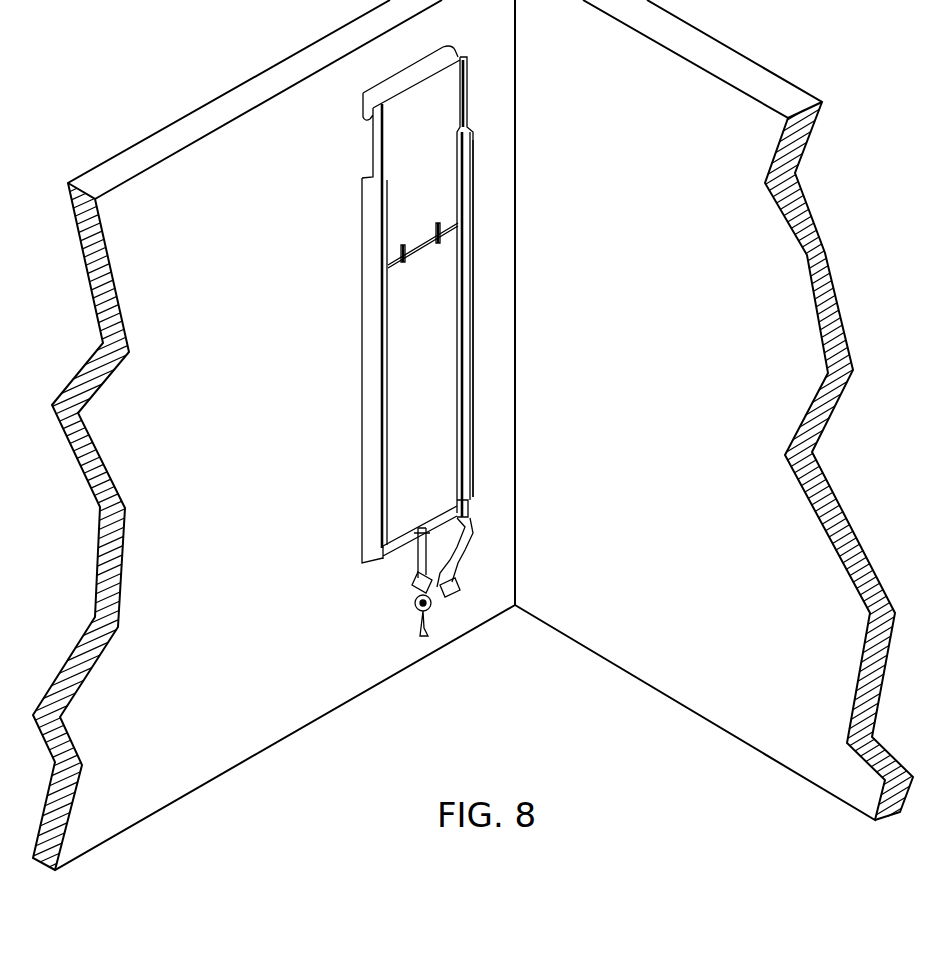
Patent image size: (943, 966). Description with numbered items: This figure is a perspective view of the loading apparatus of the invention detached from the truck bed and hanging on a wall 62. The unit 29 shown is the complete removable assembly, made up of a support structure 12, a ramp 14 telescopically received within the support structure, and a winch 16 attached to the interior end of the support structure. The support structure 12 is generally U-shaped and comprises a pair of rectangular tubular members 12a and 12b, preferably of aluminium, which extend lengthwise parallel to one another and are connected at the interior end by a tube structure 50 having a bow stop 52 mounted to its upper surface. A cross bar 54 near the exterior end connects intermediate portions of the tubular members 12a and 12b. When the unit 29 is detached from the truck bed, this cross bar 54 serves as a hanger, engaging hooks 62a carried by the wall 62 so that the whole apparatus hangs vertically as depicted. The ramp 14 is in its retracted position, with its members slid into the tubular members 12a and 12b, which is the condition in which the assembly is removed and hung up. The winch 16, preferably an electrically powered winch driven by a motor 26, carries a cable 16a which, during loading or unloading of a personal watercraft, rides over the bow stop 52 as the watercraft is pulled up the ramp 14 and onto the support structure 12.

The support structure 12 is at (376, 400).
The tubular member 12a is at (470, 175).
The tubular member 12b is at (372, 268).
The ramp 14 is at (376, 134).
The winch 16 is at (445, 600).
The cable 16a is at (425, 632).
The motor 26 is at (452, 578).
The unit 29 is at (473, 325).
The tube structure 50 is at (397, 532).
The bow stop 52 is at (453, 497).
The cross bar 54 is at (420, 250).
The wall 62 is at (205, 286).
The hooks 62a is at (403, 243).